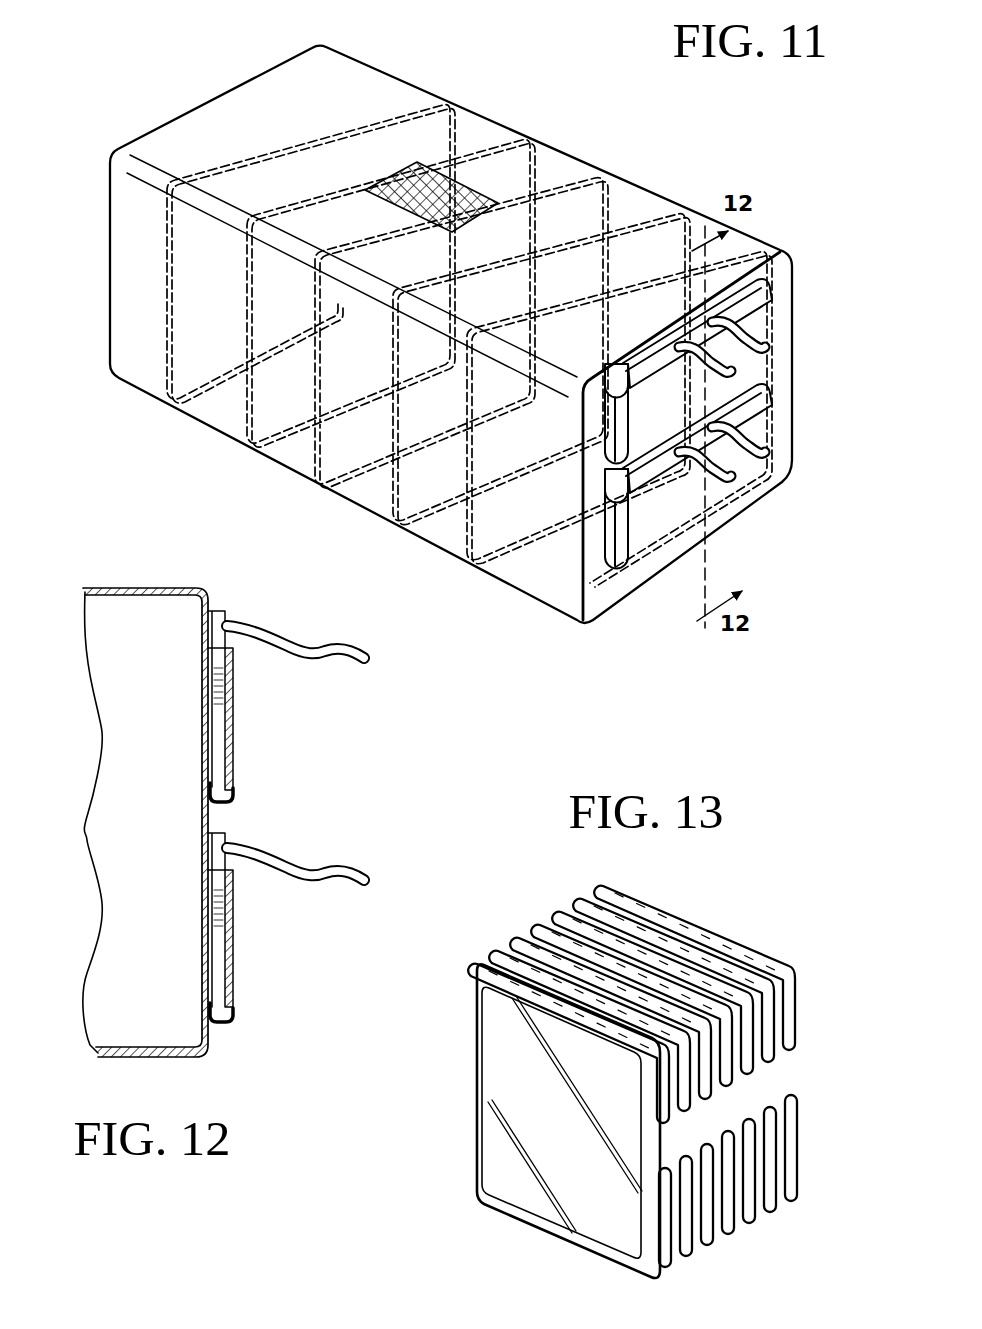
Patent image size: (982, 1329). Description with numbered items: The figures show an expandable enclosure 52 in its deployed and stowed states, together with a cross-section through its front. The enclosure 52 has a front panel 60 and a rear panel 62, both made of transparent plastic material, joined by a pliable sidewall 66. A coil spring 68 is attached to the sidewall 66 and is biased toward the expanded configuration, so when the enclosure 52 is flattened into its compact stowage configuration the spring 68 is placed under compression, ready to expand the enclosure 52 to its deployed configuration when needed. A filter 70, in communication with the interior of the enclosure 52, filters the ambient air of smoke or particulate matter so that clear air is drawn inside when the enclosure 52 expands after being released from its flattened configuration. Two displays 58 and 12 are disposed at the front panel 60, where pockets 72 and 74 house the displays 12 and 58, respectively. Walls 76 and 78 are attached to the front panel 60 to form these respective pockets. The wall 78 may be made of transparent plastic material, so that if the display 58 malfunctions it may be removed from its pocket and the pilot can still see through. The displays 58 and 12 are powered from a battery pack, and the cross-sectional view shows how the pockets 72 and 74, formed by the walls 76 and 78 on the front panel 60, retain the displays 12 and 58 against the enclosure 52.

In FIG. 11, the display 12 is at (768, 420).
In FIG. 12, the display 12 is at (215, 965).
In FIG. 11, the expandable enclosure 52 is at (469, 298).
In FIG. 13, the expandable enclosure 52 is at (640, 1082).
In FIG. 11, the display 58 is at (752, 294).
In FIG. 12, the display 58 is at (225, 704).
In FIG. 11, the front panel 60 is at (793, 330).
In FIG. 12, the front panel 60 is at (203, 813).
In FIG. 13, the rear panel 62 is at (497, 1100).
In FIG. 11, the pliable sidewall 66 is at (220, 122).
In FIG. 11, the coil spring 68 is at (562, 180).
In FIG. 11, the filter 70 is at (475, 192).
In FIG. 12, the pocket 72 is at (240, 912).
In FIG. 12, the pocket 74 is at (240, 740).
In FIG. 12, the wall 76 is at (235, 997).
In FIG. 12, the wall 78 is at (235, 763).